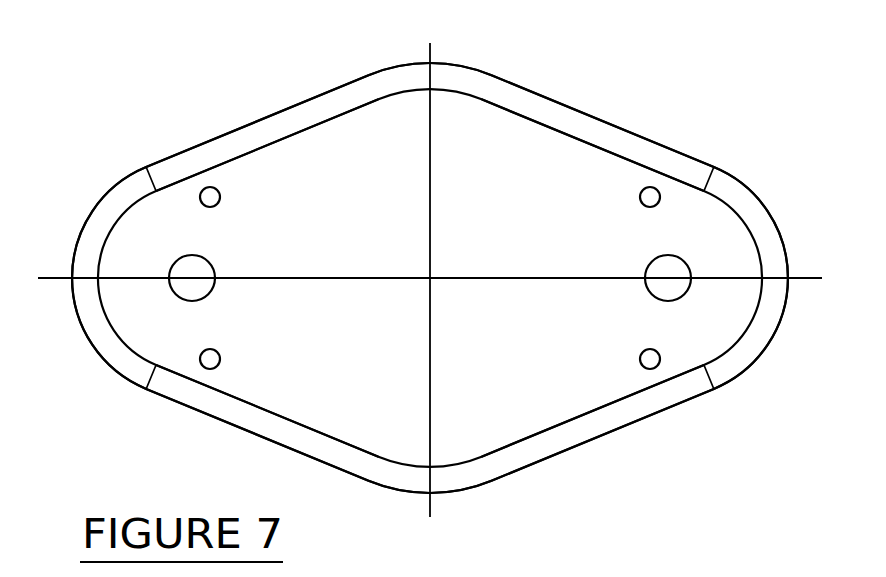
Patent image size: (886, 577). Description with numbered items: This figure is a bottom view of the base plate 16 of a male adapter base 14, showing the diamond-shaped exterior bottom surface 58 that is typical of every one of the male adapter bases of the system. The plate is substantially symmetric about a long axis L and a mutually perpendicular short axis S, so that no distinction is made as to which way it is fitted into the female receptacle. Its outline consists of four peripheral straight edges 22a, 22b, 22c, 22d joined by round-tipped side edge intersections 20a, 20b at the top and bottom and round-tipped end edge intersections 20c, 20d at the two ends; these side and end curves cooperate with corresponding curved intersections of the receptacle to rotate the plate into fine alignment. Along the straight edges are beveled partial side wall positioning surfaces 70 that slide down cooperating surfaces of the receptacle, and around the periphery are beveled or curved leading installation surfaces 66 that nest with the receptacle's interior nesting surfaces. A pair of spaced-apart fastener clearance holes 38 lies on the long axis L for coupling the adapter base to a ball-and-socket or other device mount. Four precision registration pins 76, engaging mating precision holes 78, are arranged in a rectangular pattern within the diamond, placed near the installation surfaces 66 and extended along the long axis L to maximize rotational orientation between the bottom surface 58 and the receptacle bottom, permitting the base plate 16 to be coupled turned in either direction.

The male adapter base 14 is at (628, 425).
The base plate 16 is at (603, 175).
The round-tipped side edge intersection 20a is at (420, 495).
The round-tipped side edge intersection 20b is at (425, 63).
The round-tipped end edge intersection 20c is at (785, 307).
The round-tipped end edge intersection 20d is at (77, 250).
The peripheral straight edge 22a is at (567, 450).
The peripheral straight edge 22b is at (217, 420).
The peripheral straight edge 22c is at (320, 98).
The peripheral straight edge 22d is at (597, 118).
The fastener clearance hole 38 is at (180, 287).
The exterior bottom surface 58 is at (393, 245).
The leading installation surface 66 is at (477, 80).
The partial side wall positioning surface 70 is at (225, 133).
The precision registration pin 76 is at (203, 362).
The mating precision hole 78 is at (203, 193).
The long axis L is at (795, 277).
The short axis S is at (432, 505).